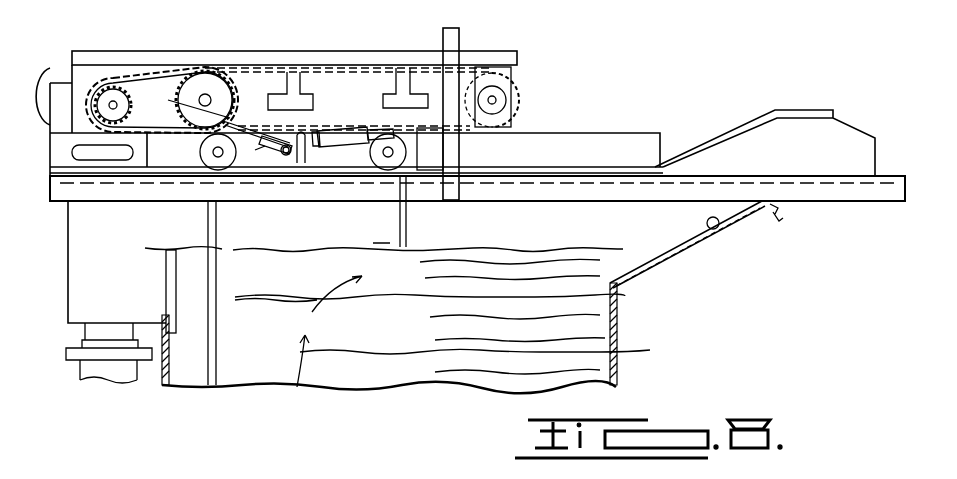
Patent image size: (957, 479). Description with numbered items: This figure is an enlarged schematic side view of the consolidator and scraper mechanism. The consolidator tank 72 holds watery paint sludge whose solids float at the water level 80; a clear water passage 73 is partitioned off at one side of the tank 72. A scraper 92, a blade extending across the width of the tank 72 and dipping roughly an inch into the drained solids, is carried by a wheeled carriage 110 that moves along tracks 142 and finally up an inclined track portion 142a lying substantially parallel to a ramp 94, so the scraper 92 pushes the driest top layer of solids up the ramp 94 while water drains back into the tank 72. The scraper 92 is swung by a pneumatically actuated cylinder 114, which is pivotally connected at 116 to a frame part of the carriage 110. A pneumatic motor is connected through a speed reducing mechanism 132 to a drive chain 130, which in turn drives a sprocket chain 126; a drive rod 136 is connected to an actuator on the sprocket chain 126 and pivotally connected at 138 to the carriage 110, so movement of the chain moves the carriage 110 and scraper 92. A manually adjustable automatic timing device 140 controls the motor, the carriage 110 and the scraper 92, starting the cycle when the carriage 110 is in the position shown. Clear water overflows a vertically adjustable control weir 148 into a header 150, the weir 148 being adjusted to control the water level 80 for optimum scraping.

The consolidator tank 72 is at (593, 331).
The clear water passage 73 is at (197, 327).
The water level 80 is at (187, 247).
The scraper 92 is at (407, 234).
The ramp 94 is at (713, 228).
The wheeled carriage 110 is at (417, 156).
The cylinder 114 is at (347, 133).
The pivotal connection of cylinder 116 is at (307, 131).
The sprocket chain 126 is at (377, 80).
The drive chain 130 is at (135, 75).
The speed reducing mechanism 132 is at (85, 107).
The drive rod 136 is at (261, 152).
The pivotal connection of drive rod 138 is at (284, 152).
The automatic timing device 140 is at (62, 102).
The tracks 142 is at (576, 167).
The inclined track portion 142a is at (715, 139).
The control weir 148 is at (183, 278).
The header 150 is at (67, 247).